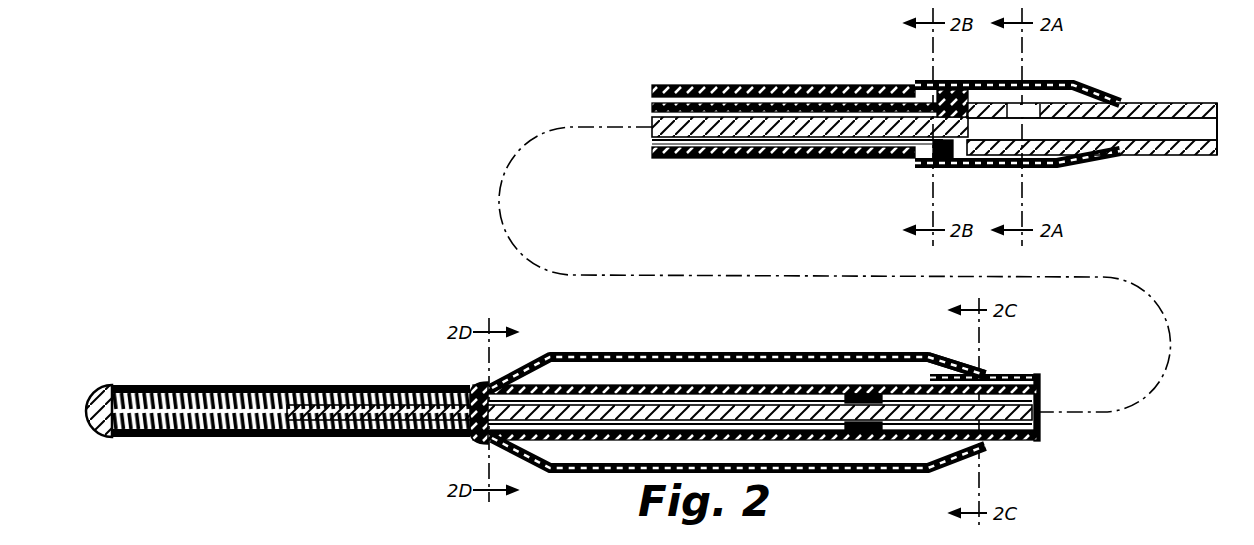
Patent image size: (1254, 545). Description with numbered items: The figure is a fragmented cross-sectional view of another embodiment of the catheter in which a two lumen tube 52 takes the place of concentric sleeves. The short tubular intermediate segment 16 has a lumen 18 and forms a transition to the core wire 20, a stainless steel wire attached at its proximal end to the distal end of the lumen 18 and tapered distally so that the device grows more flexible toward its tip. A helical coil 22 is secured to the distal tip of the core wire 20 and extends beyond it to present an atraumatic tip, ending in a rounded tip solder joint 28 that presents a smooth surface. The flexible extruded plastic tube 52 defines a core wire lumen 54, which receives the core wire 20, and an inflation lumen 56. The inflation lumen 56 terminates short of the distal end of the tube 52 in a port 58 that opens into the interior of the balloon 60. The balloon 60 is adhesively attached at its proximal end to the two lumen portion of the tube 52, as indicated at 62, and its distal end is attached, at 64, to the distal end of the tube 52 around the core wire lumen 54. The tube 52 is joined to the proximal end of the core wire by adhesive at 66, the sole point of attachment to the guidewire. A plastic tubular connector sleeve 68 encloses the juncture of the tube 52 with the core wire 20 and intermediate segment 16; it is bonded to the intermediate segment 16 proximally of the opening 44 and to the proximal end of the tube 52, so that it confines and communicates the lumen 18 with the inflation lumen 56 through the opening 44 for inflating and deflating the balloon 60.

The intermediate segment 16 is at (1145, 148).
The lumen 18 is at (1187, 132).
The core wire 20 is at (718, 134).
The helical coil 22 is at (213, 385).
The tip solder joint 28 is at (89, 395).
The opening 44 is at (1030, 109).
The two lumen tube 52 is at (838, 162).
The core wire lumen 54 is at (783, 145).
The inflation lumen 56 is at (841, 94).
The port 58 is at (928, 383).
The balloon 60 is at (790, 352).
The proximal balloon attachment 62 is at (983, 370).
The distal balloon attachment 64 is at (476, 386).
The adhesive attachment 66 is at (945, 99).
The tubular connector sleeve 68 is at (1052, 168).